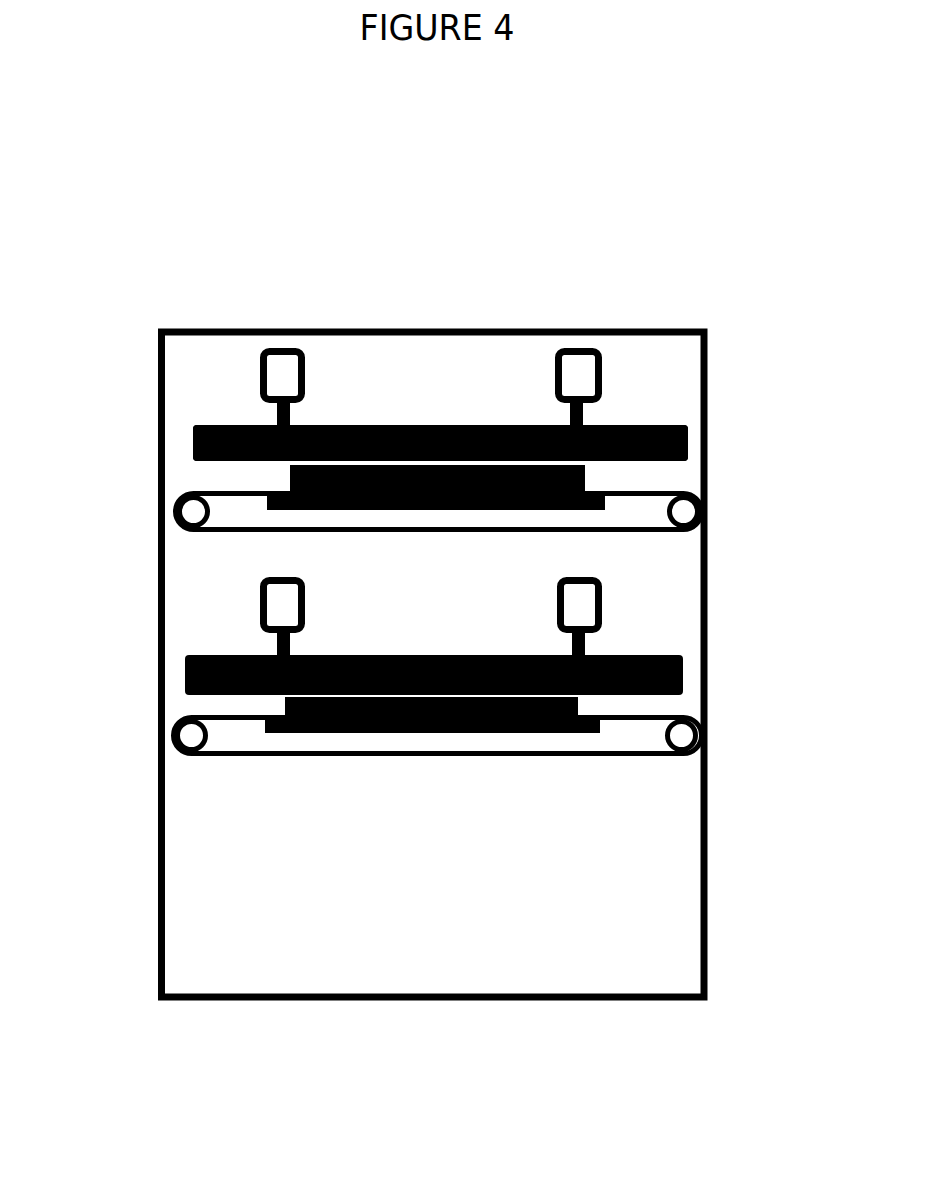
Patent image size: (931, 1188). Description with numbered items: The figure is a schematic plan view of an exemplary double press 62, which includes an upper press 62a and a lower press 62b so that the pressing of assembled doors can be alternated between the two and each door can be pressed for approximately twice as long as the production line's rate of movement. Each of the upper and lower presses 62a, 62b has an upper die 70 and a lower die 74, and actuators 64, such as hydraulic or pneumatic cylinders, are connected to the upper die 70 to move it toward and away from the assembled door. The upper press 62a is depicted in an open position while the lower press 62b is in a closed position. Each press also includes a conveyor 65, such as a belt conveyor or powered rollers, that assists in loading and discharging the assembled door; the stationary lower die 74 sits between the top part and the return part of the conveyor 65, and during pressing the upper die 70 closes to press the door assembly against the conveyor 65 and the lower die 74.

The double press 62 is at (167, 243).
The upper press 62a is at (380, 400).
The lower press 62b is at (205, 760).
The actuators 64 is at (578, 365).
The conveyor 65 is at (208, 492).
The upper die 70 is at (193, 434).
The lower die 74 is at (268, 503).